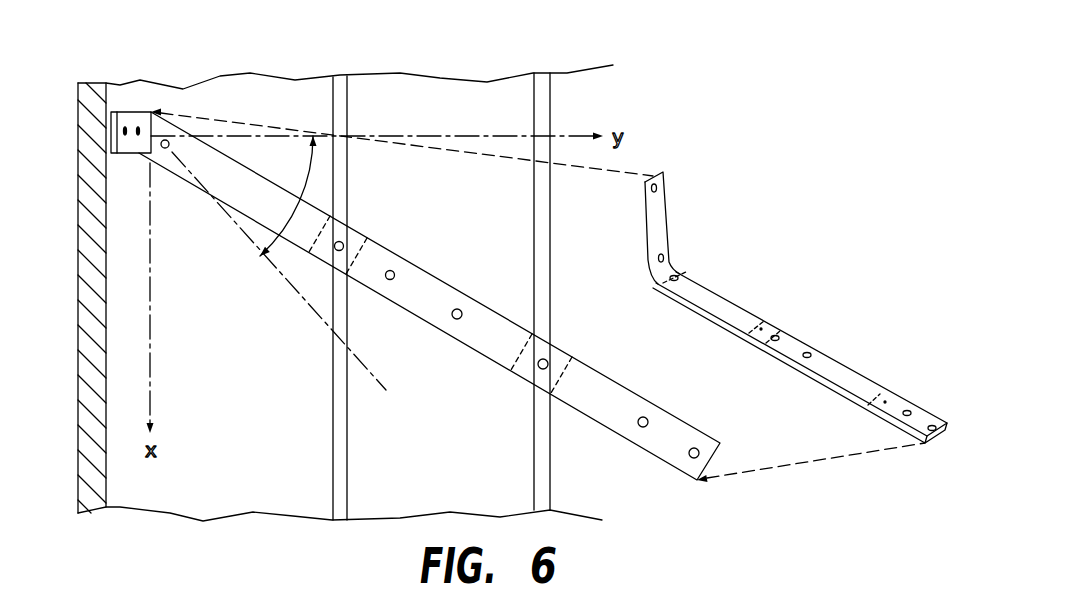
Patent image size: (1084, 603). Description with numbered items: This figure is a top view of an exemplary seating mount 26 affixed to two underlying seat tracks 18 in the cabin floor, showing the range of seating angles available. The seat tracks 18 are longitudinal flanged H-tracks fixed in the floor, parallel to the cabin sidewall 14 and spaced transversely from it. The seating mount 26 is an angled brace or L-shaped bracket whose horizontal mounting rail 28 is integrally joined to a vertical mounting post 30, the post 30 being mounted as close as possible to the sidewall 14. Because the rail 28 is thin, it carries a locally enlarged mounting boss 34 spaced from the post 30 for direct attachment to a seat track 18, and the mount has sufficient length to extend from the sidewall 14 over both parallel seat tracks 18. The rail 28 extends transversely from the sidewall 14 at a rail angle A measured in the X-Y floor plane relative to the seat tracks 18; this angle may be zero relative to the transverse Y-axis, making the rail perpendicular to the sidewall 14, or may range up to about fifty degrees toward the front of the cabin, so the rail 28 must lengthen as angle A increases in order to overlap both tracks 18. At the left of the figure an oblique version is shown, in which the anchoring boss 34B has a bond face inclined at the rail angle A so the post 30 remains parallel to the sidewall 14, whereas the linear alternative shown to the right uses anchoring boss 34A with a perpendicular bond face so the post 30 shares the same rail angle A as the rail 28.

The cabin sidewall 14 is at (106, 473).
The seat tracks 18 is at (340, 93).
The seating mount 26 is at (465, 348).
The mounting rail 28 is at (437, 277).
The mounting post 30 is at (132, 112).
The mounting boss 34 is at (352, 242).
The anchoring boss 34A is at (689, 266).
The anchoring boss 34B is at (138, 176).
The rail angle A is at (305, 186).